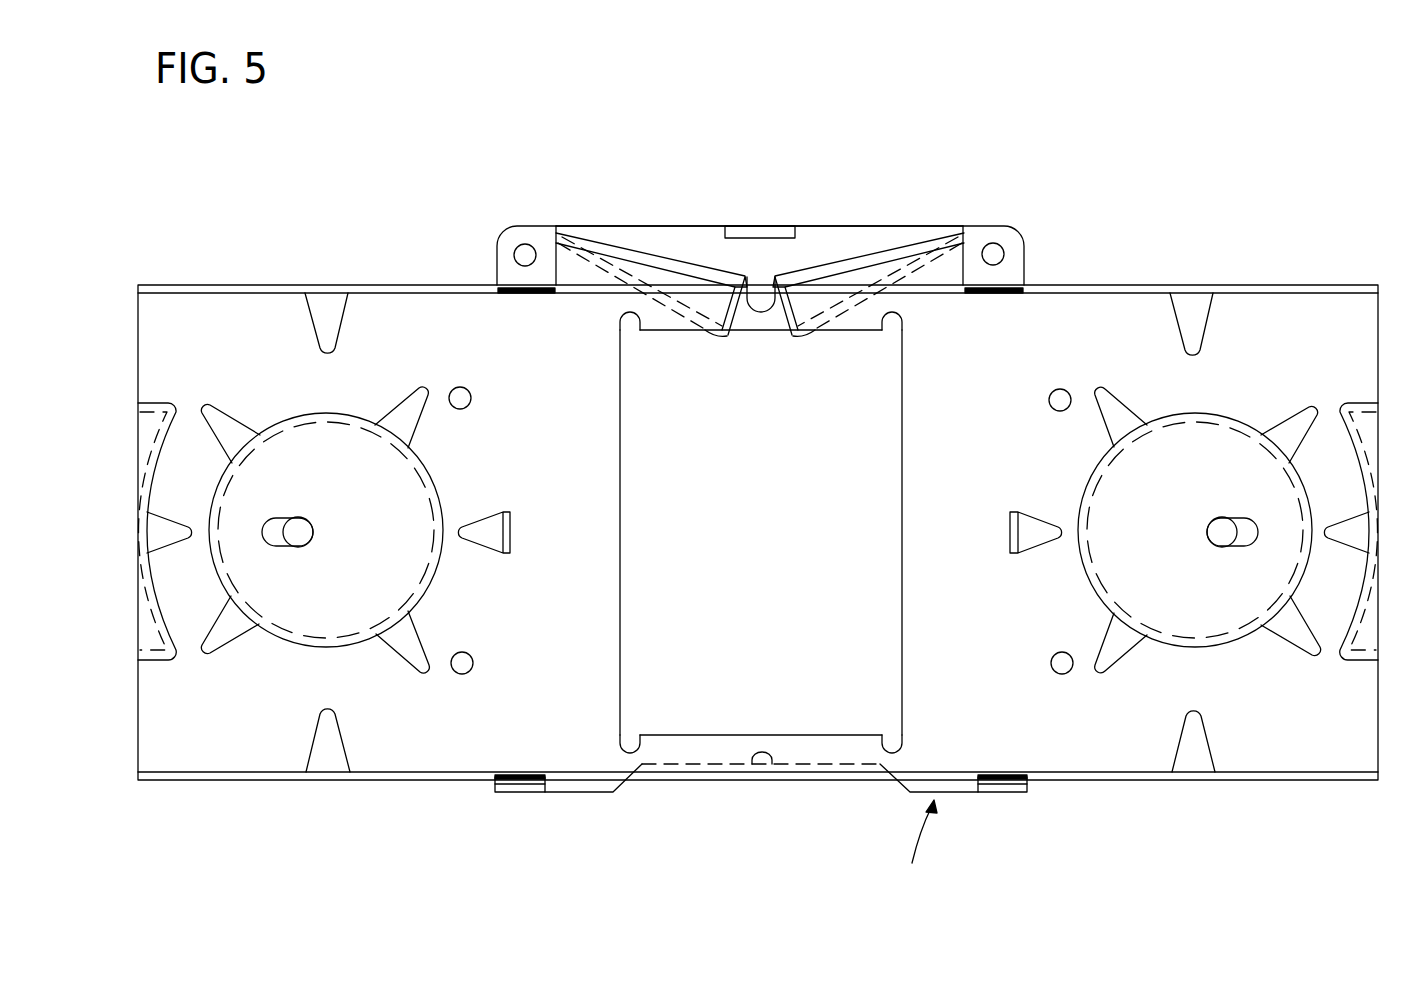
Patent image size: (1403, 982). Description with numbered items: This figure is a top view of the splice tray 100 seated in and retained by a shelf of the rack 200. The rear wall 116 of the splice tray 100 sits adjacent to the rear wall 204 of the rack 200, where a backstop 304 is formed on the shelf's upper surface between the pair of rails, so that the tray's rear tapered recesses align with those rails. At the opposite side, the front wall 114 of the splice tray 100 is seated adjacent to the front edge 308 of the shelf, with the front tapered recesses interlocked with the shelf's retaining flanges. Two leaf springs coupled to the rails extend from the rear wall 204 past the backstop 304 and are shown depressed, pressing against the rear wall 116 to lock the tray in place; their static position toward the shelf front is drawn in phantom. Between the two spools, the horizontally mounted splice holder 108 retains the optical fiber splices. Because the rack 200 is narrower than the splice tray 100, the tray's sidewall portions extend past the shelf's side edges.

The splice tray 100 is at (1285, 828).
The splice holder 108 is at (620, 660).
The front wall 114 is at (1105, 781).
The rear wall 116 is at (1155, 285).
The rack 200 is at (643, 188).
The rear wall 204 is at (917, 227).
The backstop 304 is at (767, 232).
The front edge 308 is at (615, 792).